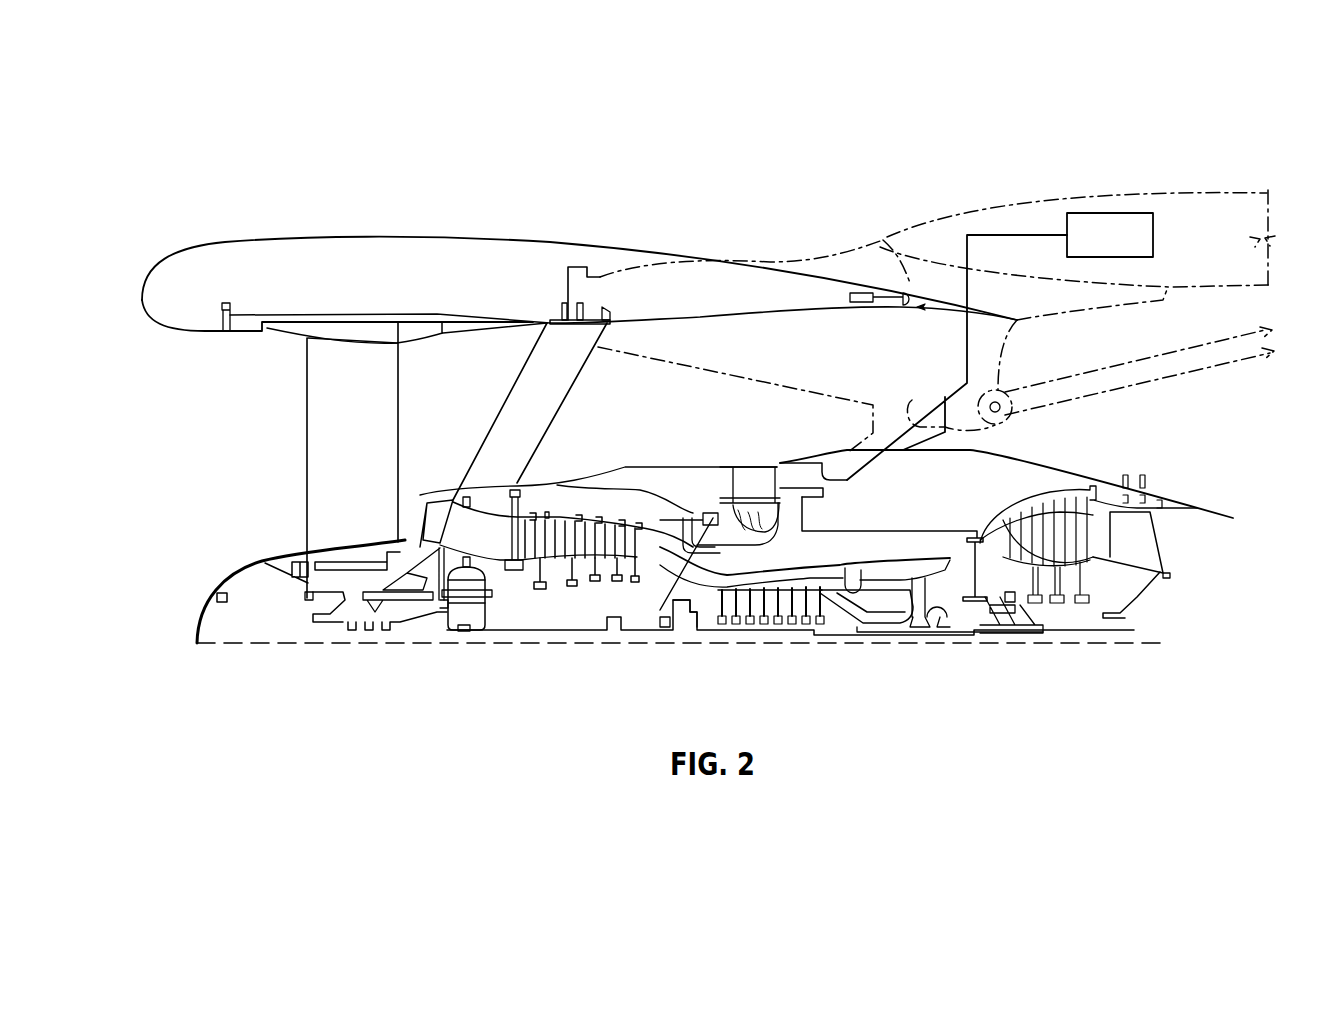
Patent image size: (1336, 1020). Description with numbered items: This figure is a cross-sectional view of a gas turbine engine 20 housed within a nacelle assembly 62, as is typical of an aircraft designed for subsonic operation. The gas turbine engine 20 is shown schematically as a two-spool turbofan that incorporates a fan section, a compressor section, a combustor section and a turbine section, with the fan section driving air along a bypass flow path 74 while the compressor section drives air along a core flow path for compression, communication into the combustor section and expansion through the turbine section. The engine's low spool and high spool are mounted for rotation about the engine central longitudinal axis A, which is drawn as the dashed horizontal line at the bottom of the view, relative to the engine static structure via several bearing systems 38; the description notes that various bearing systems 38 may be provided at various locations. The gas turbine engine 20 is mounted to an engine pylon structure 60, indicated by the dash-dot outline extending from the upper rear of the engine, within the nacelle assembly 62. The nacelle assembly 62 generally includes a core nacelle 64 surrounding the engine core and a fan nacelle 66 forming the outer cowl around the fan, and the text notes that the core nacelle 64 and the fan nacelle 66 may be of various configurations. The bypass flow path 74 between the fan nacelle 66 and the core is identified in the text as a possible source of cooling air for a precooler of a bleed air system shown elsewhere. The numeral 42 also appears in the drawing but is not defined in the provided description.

The gas turbine engine 20 is at (882, 138).
The bearing systems 38 is at (1003, 630).
The fan blade 42 is at (371, 456).
The engine pylon structure 60 is at (826, 252).
The nacelle assembly 62 is at (464, 185).
The core nacelle 64 is at (1080, 468).
The fan nacelle 66 is at (606, 242).
The bypass flow path 74 is at (456, 399).
The engine central longitudinal axis A is at (1130, 645).